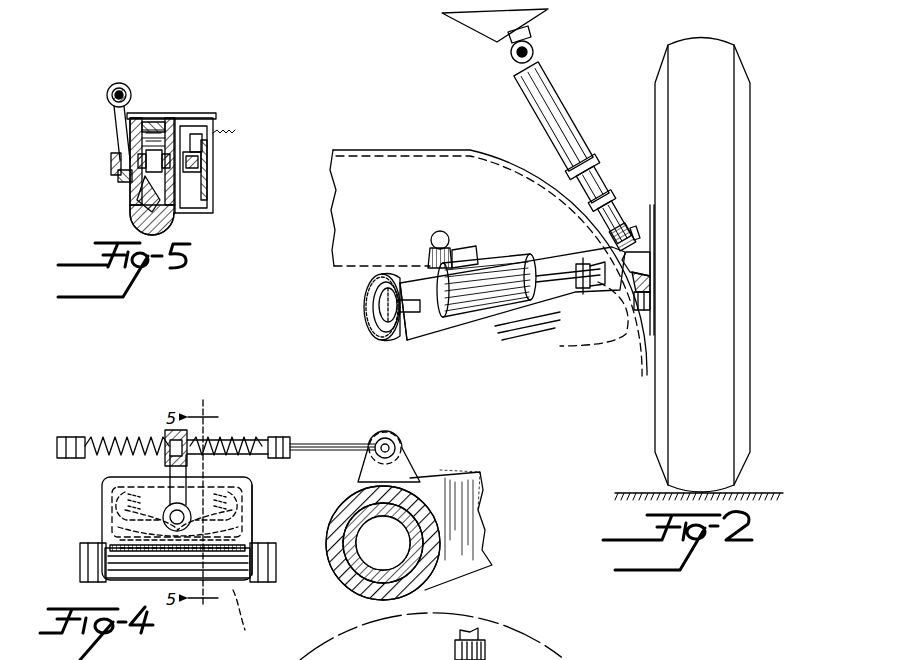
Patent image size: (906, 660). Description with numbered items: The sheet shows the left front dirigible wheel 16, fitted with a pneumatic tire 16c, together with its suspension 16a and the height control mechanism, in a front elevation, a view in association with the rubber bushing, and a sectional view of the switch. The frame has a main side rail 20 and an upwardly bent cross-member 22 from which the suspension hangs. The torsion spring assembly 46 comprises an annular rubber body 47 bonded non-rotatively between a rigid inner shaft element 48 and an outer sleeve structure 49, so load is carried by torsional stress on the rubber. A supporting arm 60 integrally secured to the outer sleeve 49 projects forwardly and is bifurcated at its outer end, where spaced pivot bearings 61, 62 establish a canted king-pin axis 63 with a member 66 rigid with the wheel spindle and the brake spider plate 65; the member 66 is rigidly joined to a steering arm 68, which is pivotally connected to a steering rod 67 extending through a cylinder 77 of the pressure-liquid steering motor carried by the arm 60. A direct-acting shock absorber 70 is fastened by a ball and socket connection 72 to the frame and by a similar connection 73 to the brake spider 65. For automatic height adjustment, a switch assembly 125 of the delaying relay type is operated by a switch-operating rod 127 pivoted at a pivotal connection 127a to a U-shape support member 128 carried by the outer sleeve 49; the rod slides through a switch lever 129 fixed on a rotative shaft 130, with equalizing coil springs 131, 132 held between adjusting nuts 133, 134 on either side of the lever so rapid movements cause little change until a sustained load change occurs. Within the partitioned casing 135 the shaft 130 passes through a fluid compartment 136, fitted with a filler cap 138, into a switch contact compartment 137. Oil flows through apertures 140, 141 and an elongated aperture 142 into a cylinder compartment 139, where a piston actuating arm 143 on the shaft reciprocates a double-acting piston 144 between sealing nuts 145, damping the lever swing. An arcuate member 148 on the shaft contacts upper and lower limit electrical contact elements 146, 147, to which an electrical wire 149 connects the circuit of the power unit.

In FIG. 2, the left front wheel 16 is at (750, 141).
In FIG. 2, the left front wheel suspension 16a is at (570, 342).
In FIG. 2, the pneumatic tire 16c is at (722, 100).
In FIG. 2, the main side rail 20 is at (545, 18).
In FIG. 2, the cross-member 22 is at (348, 262).
In FIG. 4, the torsion spring assembly 46 is at (440, 512).
In FIG. 2, the torsion spring assembly 46 is at (525, 340).
In FIG. 4, the rubber body 47 is at (335, 565).
In FIG. 2, the rubber body 47 is at (364, 330).
In FIG. 4, the inner shaft element 48 is at (345, 578).
In FIG. 2, the inner shaft element 48 is at (373, 307).
In FIG. 4, the outer sleeve structure 49 is at (355, 595).
In FIG. 2, the outer sleeve structure 49 is at (372, 340).
In FIG. 4, the supporting arm 60 is at (467, 474).
In FIG. 2, the supporting arm 60 is at (502, 340).
In FIG. 2, the pivot bearing 61 is at (652, 300).
In FIG. 2, the pivot bearing 62 is at (645, 240).
In FIG. 2, the king-pin axis 63 is at (632, 226).
In FIG. 2, the brake spider plate 65 is at (654, 227).
In FIG. 2, the member 66 is at (652, 262).
In FIG. 2, the steering rod 67 is at (565, 272).
In FIG. 2, the steering arm 68 is at (583, 262).
In FIG. 2, the shock absorber 70 is at (560, 82).
In FIG. 2, the ball and socket connection 72 is at (535, 48).
In FIG. 2, the connection 73 is at (652, 283).
In FIG. 2, the cylinder 77 is at (500, 275).
In FIG. 5, the switch assembly 125 is at (212, 208).
In FIG. 4, the switch assembly 125 is at (225, 583).
In FIG. 5, the switch-operating rod 127 is at (110, 99).
In FIG. 4, the switch-operating rod 127 is at (323, 443).
In FIG. 2, the switch-operating rod 127 is at (434, 232).
In FIG. 4, the pivotal connection 127a is at (389, 440).
In FIG. 2, the pivotal connection 127a is at (460, 248).
In FIG. 4, the U-shape support member 128 is at (402, 465).
In FIG. 2, the U-shape support member 128 is at (428, 258).
In FIG. 5, the switch lever 129 is at (115, 128).
In FIG. 4, the switch lever 129 is at (160, 440).
In FIG. 5, the rotative shaft 130 is at (111, 160).
In FIG. 4, the rotative shaft 130 is at (170, 510).
In FIG. 5, the equalizing coil spring 131 is at (108, 88).
In FIG. 4, the equalizing coil spring 131 is at (238, 436).
In FIG. 4, the equalizing coil spring 132 is at (116, 438).
In FIG. 4, the adjusting nut 133 is at (282, 436).
In FIG. 4, the adjusting nut 134 is at (70, 436).
In FIG. 5, the partitioned casing 135 is at (182, 118).
In FIG. 4, the partitioned casing 135 is at (252, 497).
In FIG. 5, the fluid compartment 136 is at (150, 125).
In FIG. 5, the switch contact compartment 137 is at (206, 190).
In FIG. 5, the filler cap 138 is at (165, 120).
In FIG. 4, the filler cap 138 is at (168, 440).
In FIG. 4, the cylinder compartment 139 is at (241, 626).
In FIG. 4, the aperture 140 is at (240, 512).
In FIG. 4, the aperture 141 is at (118, 541).
In FIG. 4, the elongated aperture 142 is at (118, 526).
In FIG. 5, the piston actuating arm 143 is at (120, 180).
In FIG. 4, the piston actuating arm 143 is at (150, 585).
In FIG. 5, the piston 144 is at (148, 207).
In FIG. 4, the piston 144 is at (120, 578).
In FIG. 4, the sealing nut 145 is at (82, 560).
In FIG. 4, the upper limit electrical contact element 146 is at (240, 488).
In FIG. 5, the lower limit electrical contact element 147 is at (200, 126).
In FIG. 4, the lower limit electrical contact element 147 is at (120, 492).
In FIG. 5, the arcuate member 148 is at (204, 170).
In FIG. 4, the arcuate member 148 is at (120, 510).
In FIG. 5, the electrical wire 149 is at (236, 133).